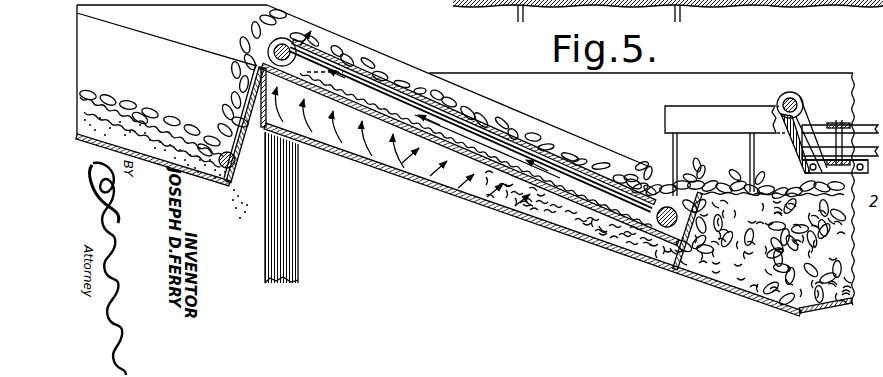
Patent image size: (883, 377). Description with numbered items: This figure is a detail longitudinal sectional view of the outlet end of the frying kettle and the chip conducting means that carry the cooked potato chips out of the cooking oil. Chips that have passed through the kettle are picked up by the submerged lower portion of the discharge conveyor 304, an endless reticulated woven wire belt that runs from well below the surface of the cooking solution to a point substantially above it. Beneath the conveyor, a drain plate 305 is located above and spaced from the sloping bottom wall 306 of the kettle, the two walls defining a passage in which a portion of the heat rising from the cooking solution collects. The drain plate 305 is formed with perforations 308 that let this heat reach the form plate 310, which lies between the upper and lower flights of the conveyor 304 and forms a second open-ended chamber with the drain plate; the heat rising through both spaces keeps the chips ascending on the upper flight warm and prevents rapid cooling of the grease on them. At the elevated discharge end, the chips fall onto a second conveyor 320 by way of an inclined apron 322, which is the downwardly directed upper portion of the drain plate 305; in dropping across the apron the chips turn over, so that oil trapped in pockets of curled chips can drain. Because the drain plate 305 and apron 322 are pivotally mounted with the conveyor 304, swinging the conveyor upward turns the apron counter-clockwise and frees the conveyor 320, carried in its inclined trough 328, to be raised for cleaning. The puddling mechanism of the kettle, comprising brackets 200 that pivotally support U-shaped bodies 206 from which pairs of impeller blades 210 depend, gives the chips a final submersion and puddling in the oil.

The bracket 200 is at (798, 152).
The U-shaped body 206 is at (720, 119).
The impeller blades 210 is at (673, 142).
The discharge conveyor 304 is at (428, 34).
The drain plate 305 is at (494, 167).
The sloping bottom wall 306 is at (581, 238).
The perforations 308 is at (371, 149).
The form plate 310 is at (518, 127).
The second conveyor 320 is at (167, 125).
The inclined apron 322 is at (242, 148).
The trough 328 is at (95, 133).